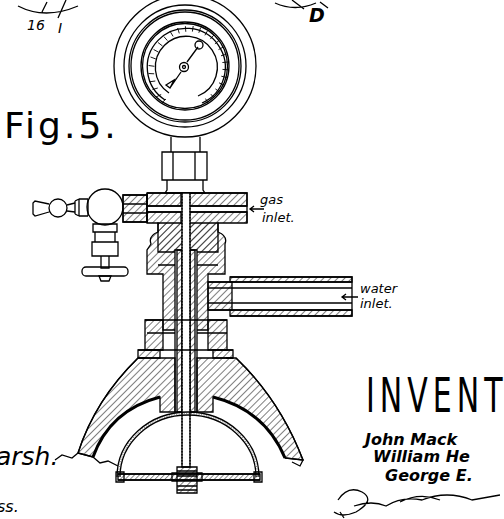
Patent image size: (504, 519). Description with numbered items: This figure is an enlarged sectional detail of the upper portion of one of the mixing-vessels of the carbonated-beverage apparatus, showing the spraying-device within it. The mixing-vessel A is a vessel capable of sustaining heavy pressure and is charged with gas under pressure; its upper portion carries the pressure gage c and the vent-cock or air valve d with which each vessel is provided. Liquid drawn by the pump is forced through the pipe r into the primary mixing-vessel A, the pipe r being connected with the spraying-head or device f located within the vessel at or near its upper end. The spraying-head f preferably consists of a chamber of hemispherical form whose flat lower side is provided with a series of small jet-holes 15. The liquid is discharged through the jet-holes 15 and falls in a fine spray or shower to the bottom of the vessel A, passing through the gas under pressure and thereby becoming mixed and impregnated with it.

The pressure gage c is at (228, 117).
The vent-cock or air valve d is at (105, 196).
The pipe r is at (297, 316).
The spraying-head or device f is at (229, 440).
The mixing-vessel A is at (292, 431).
The jet-holes 15 is at (138, 481).